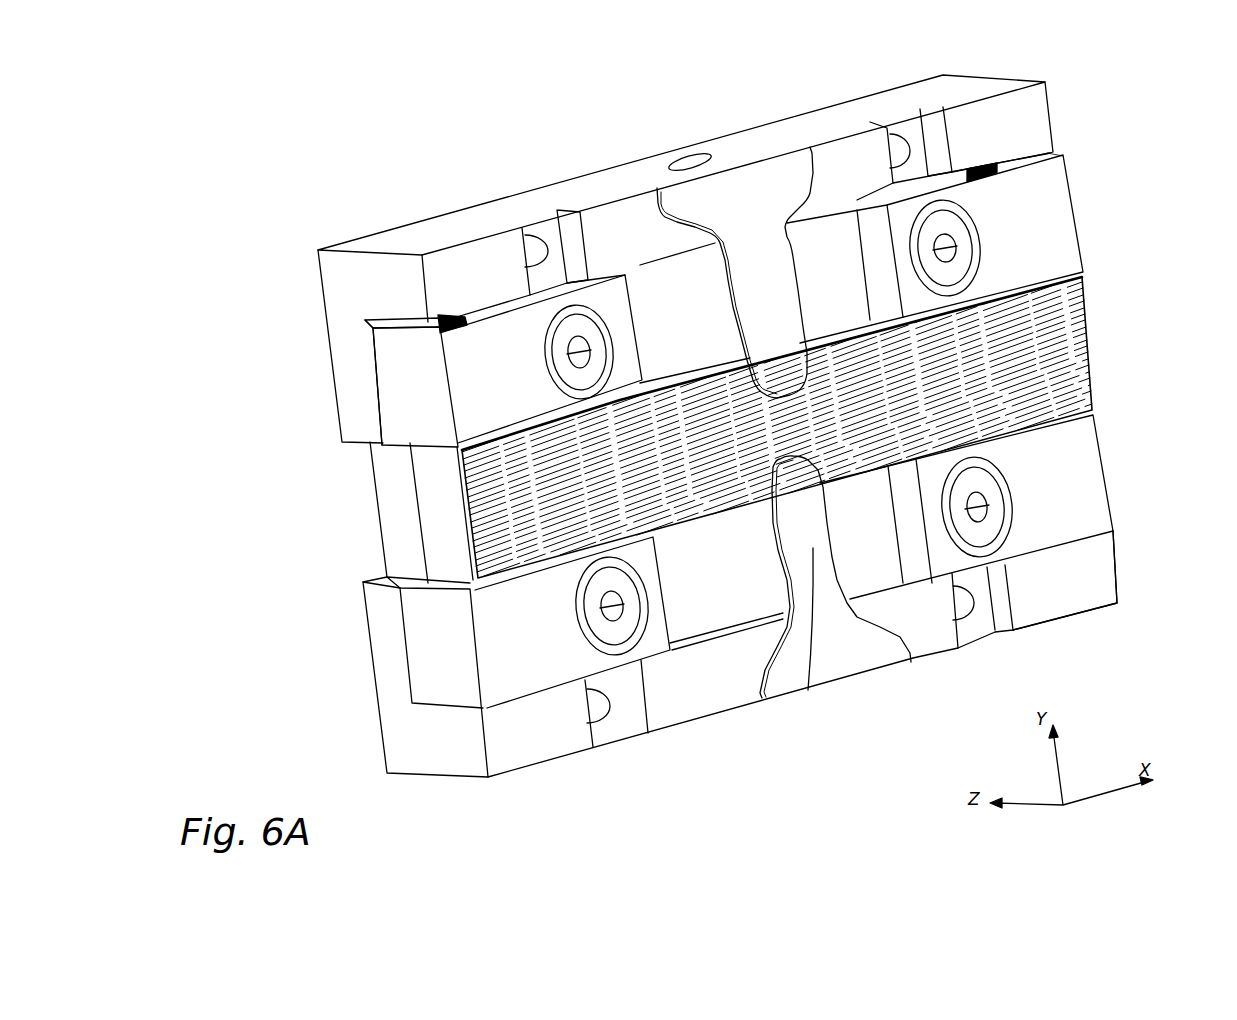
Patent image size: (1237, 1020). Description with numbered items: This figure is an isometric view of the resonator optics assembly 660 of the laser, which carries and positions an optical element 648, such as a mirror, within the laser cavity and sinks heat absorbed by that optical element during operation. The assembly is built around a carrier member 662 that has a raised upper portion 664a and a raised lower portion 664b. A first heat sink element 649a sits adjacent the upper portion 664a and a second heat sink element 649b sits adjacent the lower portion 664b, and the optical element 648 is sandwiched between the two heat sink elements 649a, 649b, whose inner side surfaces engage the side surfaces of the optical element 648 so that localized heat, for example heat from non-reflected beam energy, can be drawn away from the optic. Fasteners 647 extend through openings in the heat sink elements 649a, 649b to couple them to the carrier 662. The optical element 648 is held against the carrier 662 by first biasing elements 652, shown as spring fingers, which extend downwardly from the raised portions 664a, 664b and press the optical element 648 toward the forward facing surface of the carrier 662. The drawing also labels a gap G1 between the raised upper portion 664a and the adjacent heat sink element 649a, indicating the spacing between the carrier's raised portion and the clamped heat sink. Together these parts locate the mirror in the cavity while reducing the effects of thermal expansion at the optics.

The clamping assembly 660 is at (341, 153).
The carrier member 662 is at (788, 127).
The raised upper portion 664a is at (1007, 127).
The raised lower portion 664b is at (1052, 598).
The gap G1 is at (1059, 151).
The fastener 647 is at (957, 237).
The first heat sink element 649a is at (425, 368).
The second heat sink element 649b is at (435, 655).
The optical element 648 is at (487, 513).
The first biasing element 652 is at (752, 248).